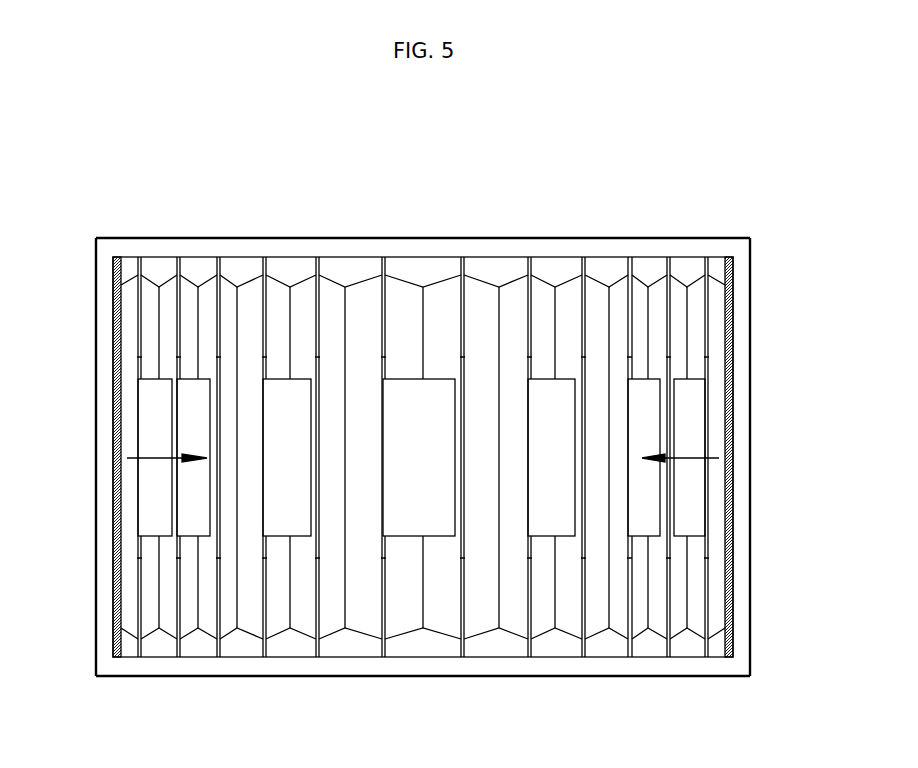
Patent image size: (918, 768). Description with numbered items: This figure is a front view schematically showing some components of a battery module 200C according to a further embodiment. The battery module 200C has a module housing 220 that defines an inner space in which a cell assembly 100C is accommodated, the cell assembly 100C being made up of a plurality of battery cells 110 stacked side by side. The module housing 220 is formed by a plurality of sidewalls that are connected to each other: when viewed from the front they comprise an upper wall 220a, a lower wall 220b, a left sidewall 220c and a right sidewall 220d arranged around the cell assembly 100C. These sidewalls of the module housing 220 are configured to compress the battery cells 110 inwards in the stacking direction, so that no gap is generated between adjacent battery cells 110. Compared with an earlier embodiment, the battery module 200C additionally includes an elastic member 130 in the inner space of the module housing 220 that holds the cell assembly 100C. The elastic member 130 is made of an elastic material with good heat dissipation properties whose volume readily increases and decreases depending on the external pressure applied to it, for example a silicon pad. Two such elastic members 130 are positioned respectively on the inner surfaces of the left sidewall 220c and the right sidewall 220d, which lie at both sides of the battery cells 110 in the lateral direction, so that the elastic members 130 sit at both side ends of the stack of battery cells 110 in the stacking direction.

The battery module 200C is at (233, 120).
The module housing 220 is at (254, 234).
The upper wall 220a is at (421, 237).
The lower wall 220b is at (423, 678).
The left sidewall 220c is at (96, 417).
The right sidewall 220d is at (751, 420).
The elastic member 130 is at (112, 363).
The cell assembly 100C is at (288, 273).
The battery cells 110 is at (210, 278).